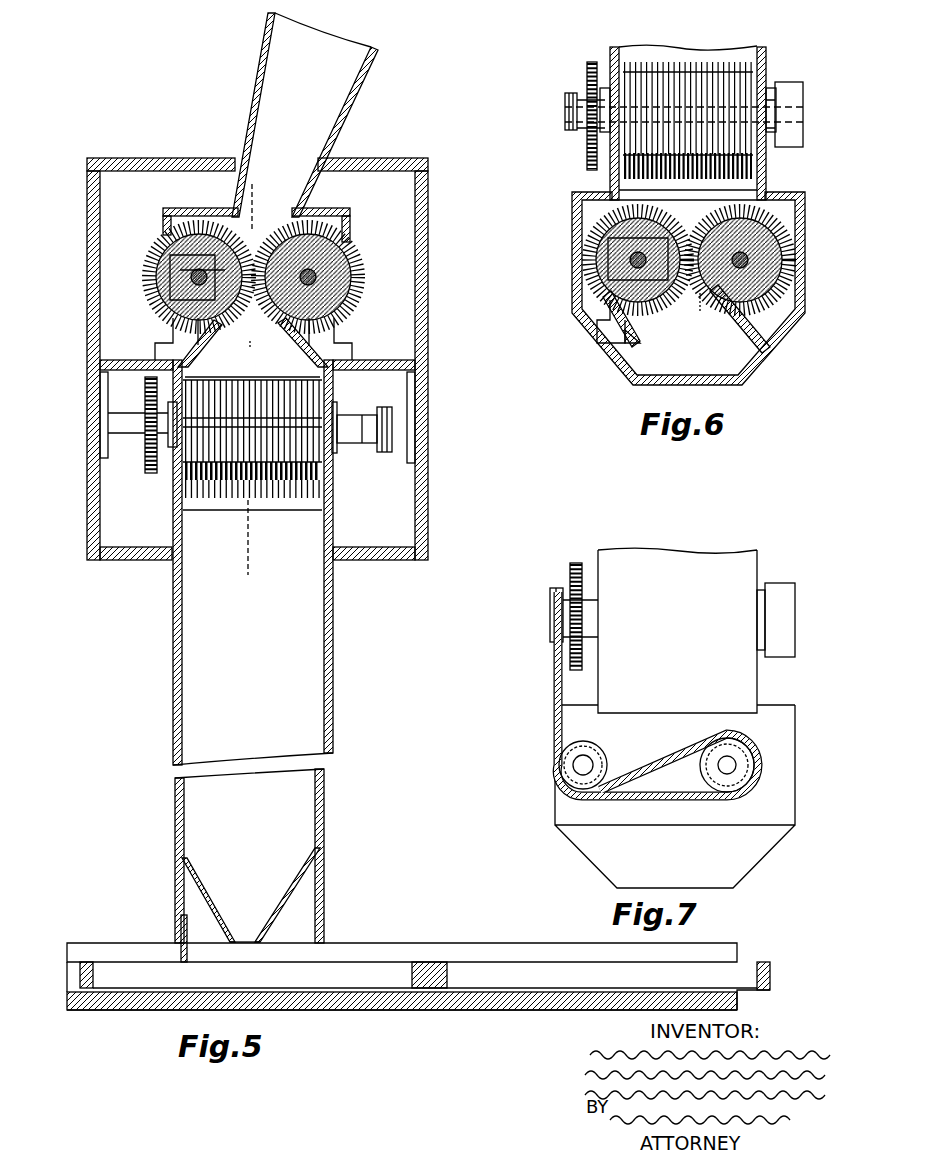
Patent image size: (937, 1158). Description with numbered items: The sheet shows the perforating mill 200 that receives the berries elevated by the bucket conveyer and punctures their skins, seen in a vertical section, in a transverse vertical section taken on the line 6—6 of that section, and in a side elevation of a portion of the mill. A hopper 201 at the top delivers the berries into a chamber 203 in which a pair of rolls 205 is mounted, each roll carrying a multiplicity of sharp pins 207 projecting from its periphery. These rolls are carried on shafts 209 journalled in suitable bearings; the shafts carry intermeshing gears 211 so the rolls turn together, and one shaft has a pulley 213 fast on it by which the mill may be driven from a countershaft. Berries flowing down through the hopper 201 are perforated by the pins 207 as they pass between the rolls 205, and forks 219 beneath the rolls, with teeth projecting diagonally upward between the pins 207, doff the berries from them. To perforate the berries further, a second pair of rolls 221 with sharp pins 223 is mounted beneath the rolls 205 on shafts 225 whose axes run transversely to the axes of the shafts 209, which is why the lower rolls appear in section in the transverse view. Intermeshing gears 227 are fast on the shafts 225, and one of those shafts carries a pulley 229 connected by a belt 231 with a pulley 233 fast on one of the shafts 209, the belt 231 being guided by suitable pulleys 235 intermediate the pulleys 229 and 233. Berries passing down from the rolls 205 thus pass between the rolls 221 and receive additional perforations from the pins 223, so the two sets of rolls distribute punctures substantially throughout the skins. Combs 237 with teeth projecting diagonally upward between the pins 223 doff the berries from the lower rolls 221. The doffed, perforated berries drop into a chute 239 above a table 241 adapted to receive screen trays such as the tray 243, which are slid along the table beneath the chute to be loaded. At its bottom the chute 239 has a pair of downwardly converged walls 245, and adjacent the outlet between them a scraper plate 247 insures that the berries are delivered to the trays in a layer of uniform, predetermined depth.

In FIG. 5, the perforating mill 200 is at (432, 185).
In FIG. 5, the hopper 201 is at (357, 97).
In FIG. 5, the chamber 203 is at (340, 213).
In FIG. 6, the chamber 203 is at (612, 54).
In FIG. 7, the chamber 203 is at (747, 675).
In FIG. 5, the rolls 205 is at (160, 264).
In FIG. 6, the rolls 205 is at (648, 73).
In FIG. 5, the sharp pins 207 is at (190, 203).
In FIG. 6, the sharp pins 207 is at (695, 70).
In FIG. 5, the shafts 209 is at (185, 286).
In FIG. 6, the shafts 209 is at (566, 123).
In FIG. 5, the intermeshing gears 211 is at (257, 335).
In FIG. 6, the intermeshing gears 211 is at (587, 71).
In FIG. 7, the intermeshing gears 211 is at (570, 570).
In FIG. 6, the pulley 213 is at (787, 85).
In FIG. 7, the pulley 213 is at (780, 590).
In FIG. 5, the forks 219 is at (298, 348).
In FIG. 5, the rolls 221 is at (312, 398).
In FIG. 6, the rolls 221 is at (608, 293).
In FIG. 5, the sharp pins 223 is at (247, 381).
In FIG. 6, the sharp pins 223 is at (620, 222).
In FIG. 6, the shafts 225 is at (713, 233).
In FIG. 5, the intermeshing gears 227 is at (150, 470).
In FIG. 6, the intermeshing gears 227 is at (710, 297).
In FIG. 5, the pulley 229 is at (392, 423).
In FIG. 7, the pulley 229 is at (737, 777).
In FIG. 7, the belt 231 is at (557, 680).
In FIG. 6, the pulley 233 is at (570, 126).
In FIG. 7, the pulley 233 is at (550, 625).
In FIG. 7, the guide pulleys 235 is at (590, 748).
In FIG. 5, the combs 237 is at (250, 487).
In FIG. 6, the combs 237 is at (650, 320).
In FIG. 5, the chute 239 is at (324, 796).
In FIG. 5, the table 241 is at (350, 1003).
In FIG. 5, the tray 243 is at (367, 988).
In FIG. 5, the downwardly converged walls 245 is at (272, 905).
In FIG. 5, the scraper plate 247 is at (180, 952).
In FIG. 5, the section line 6— 6 is at (250, 380).